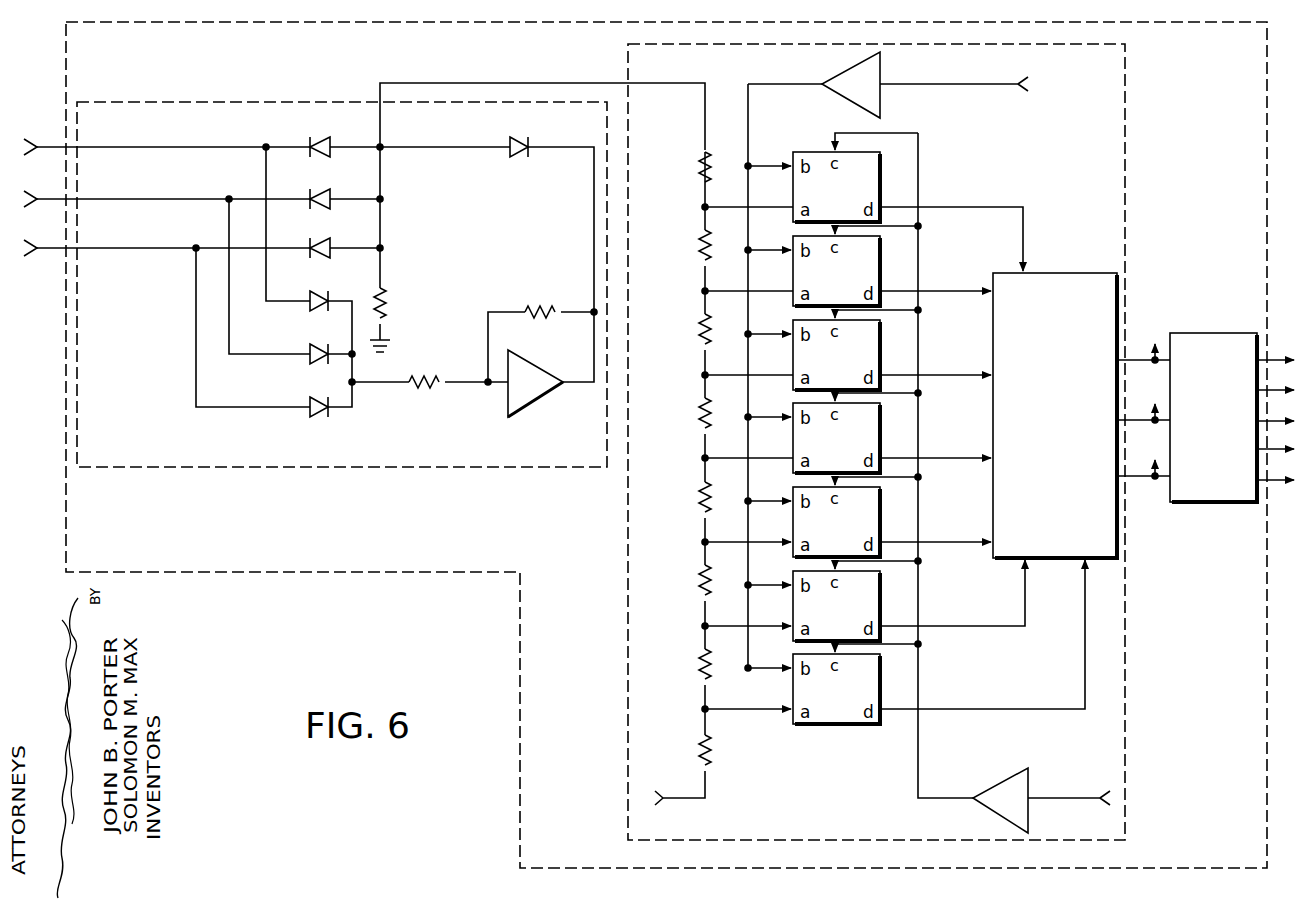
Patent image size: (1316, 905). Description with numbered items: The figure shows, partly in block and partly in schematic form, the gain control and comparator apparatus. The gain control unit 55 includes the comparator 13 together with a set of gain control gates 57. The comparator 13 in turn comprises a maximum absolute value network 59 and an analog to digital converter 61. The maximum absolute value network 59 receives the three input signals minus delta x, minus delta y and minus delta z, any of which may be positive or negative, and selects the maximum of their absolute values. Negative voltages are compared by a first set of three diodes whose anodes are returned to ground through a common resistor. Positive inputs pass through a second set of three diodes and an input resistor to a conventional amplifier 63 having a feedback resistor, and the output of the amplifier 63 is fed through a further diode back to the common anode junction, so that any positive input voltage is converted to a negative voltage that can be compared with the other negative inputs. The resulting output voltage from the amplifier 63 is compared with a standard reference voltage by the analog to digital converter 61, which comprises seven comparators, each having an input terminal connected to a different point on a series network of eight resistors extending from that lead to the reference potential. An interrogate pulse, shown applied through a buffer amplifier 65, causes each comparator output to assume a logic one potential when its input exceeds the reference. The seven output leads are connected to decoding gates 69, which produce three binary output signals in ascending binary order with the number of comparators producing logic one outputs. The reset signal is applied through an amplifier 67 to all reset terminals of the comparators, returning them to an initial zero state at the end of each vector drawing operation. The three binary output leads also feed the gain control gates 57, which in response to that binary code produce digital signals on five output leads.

The comparator 13 is at (616, 473).
The gain control unit 55 is at (494, 569).
The gain control gates 57 is at (1200, 333).
The maximum absolute value network 59 is at (586, 451).
The analog to digital converter 61 is at (1074, 182).
The amplifier 63 is at (566, 368).
The interrogate buffer amplifier 65 is at (845, 70).
The amplifier 67 is at (1011, 779).
The decoding gates 69 is at (1060, 273).